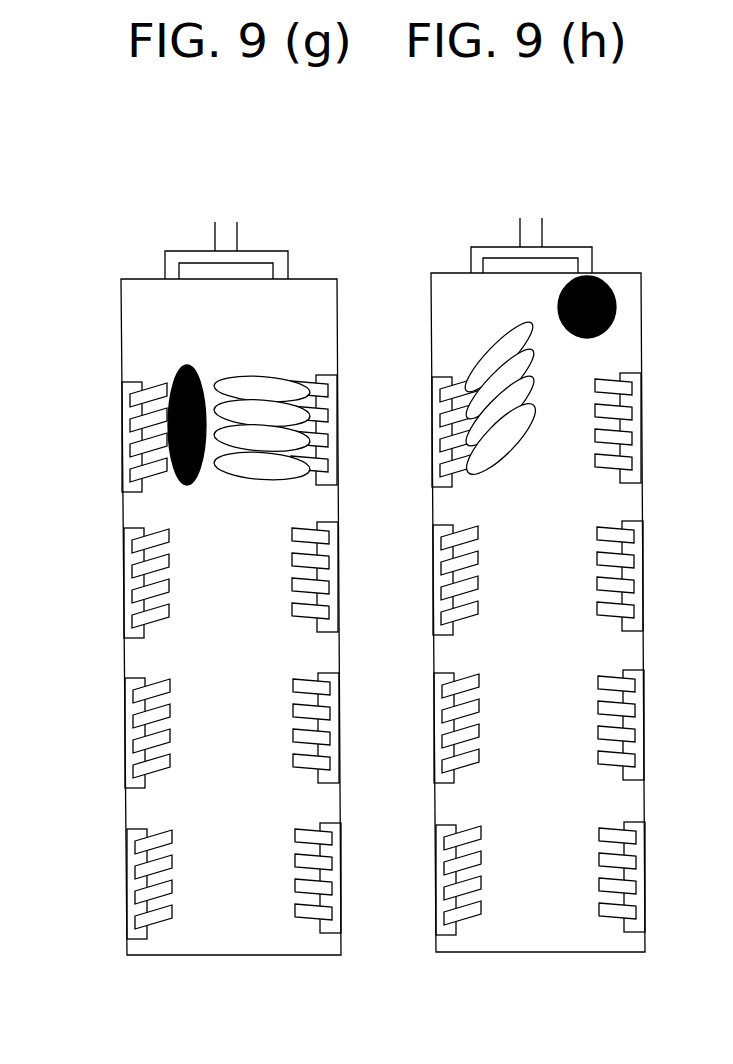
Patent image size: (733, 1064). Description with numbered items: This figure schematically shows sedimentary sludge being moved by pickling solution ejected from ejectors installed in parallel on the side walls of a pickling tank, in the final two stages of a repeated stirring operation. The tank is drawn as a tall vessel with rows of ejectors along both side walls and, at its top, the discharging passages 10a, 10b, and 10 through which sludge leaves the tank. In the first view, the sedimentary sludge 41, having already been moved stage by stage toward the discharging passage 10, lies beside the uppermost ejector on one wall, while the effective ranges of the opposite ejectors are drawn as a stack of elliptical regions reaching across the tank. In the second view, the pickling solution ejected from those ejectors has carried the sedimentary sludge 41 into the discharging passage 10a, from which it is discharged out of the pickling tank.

The discharging passage 10 is at (542, 220).
The discharging passage 10a is at (583, 260).
The discharging passage 10b is at (471, 258).
The sedimentary sludge 41 is at (203, 388).